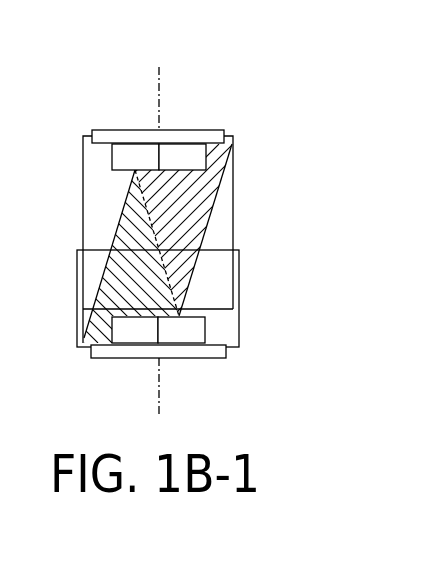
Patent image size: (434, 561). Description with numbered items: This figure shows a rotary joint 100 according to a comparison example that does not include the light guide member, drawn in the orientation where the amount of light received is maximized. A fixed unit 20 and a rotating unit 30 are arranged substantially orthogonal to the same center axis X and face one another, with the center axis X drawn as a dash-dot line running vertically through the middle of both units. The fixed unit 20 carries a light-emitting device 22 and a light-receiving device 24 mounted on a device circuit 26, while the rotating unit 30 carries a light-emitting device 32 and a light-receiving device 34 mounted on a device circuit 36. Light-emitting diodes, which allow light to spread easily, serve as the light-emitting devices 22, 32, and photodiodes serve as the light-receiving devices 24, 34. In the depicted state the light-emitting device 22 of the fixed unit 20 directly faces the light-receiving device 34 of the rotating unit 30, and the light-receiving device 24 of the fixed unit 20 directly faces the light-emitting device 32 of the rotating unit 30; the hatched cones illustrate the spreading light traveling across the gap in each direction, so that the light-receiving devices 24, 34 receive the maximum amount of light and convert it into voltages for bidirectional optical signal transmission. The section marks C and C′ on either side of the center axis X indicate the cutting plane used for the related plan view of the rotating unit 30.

The rotary joint 100 is at (275, 64).
The fixed unit 20 is at (240, 312).
The light-emitting device 22 is at (205, 321).
The light-receiving device 24 is at (112, 330).
The device circuit 26 is at (197, 358).
The rotating unit 30 is at (233, 228).
The light-emitting device 32 is at (112, 163).
The light-receiving device 34 is at (207, 163).
The device circuit 36 is at (104, 130).
The center axis X is at (160, 70).
The cross-section line C is at (157, 359).
The cross-section line C' C′ is at (160, 130).